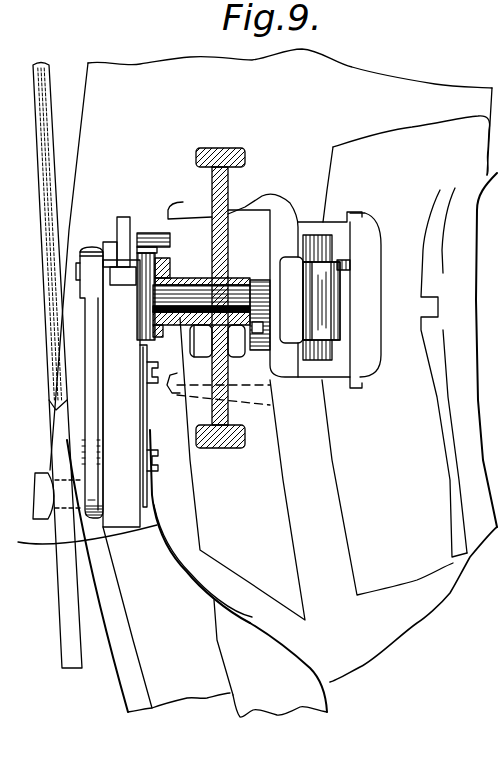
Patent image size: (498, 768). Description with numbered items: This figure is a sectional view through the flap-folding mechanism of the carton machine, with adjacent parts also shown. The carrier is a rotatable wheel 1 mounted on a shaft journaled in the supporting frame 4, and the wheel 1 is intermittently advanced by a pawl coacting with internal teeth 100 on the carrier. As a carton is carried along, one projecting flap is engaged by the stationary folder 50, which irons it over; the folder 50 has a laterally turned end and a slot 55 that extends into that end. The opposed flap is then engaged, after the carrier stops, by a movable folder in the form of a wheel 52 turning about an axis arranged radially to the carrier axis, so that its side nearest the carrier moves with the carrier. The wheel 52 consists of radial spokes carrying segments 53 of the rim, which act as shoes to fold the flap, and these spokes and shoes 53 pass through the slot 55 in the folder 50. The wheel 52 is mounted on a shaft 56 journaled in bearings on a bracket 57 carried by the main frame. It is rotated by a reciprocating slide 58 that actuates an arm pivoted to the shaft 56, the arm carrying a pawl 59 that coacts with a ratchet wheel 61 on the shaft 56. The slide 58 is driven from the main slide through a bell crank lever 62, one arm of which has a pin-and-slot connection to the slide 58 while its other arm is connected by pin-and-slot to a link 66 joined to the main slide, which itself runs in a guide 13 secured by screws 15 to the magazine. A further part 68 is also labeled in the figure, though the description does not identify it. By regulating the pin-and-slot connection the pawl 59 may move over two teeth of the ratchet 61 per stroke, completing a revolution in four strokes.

The rotatable wheel 1 is at (413, 405).
The supporting frame 4 is at (33, 490).
The guide 13 is at (78, 537).
The screws 15 is at (205, 592).
The stationary folder 50 is at (236, 469).
The wheel 52 is at (213, 236).
The segments 53 is at (225, 138).
The slot 55 is at (198, 342).
The shaft 56 is at (221, 291).
The bracket 57 is at (140, 355).
The reciprocating slide 58 is at (122, 285).
The pawl 59 is at (170, 247).
The ratchet wheel 61 is at (162, 333).
The bell crank lever 62 is at (93, 420).
The link 66 is at (48, 355).
The cap 68 is at (51, 246).
The internal teeth 100 is at (432, 310).